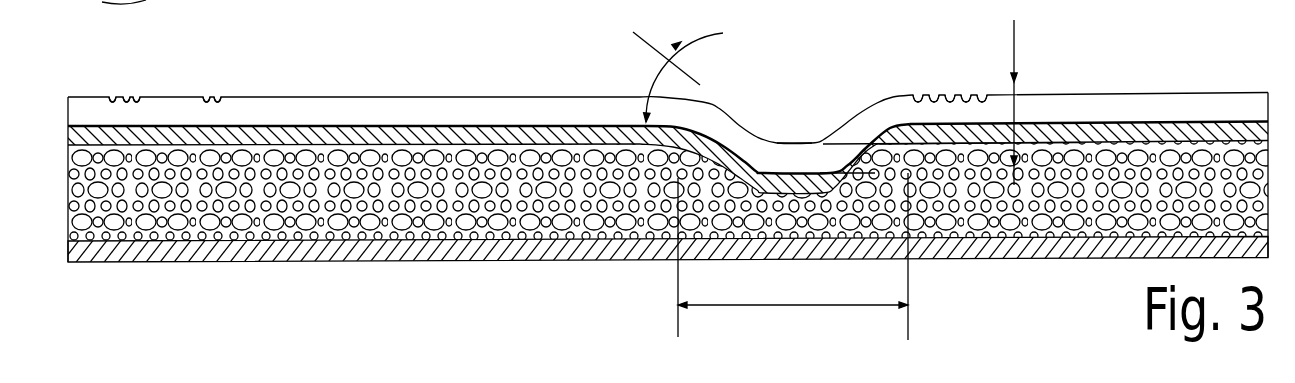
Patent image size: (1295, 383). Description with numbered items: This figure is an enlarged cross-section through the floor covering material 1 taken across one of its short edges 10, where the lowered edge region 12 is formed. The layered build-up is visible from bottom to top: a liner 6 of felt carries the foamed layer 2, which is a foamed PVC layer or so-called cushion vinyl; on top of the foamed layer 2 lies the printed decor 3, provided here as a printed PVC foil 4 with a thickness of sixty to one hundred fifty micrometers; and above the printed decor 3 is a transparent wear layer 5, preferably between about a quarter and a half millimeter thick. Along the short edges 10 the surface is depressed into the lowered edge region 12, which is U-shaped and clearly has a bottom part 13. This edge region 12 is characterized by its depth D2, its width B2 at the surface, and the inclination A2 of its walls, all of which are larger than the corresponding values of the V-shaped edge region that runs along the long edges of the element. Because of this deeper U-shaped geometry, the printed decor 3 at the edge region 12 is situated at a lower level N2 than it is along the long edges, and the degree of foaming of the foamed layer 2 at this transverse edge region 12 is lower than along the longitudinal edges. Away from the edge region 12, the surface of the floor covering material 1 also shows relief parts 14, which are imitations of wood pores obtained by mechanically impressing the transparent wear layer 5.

The floor covering material 1 is at (190, 304).
The foamed layer 2 is at (85, 197).
The printed decor 3 is at (323, 122).
The printed PVC foil 4 is at (503, 134).
The transparent wear layer 5 is at (587, 112).
The liner 6 is at (396, 253).
The short edges 10 is at (843, 110).
The lowered edge region 12 is at (843, 65).
The bottom part 13 is at (781, 148).
The relief parts 14 is at (465, 98).
The inclination of the walls A2 is at (712, 33).
The width at the surface B2 is at (793, 260).
The depth D2 is at (950, 100).
The level of the printed decor N2 is at (839, 189).